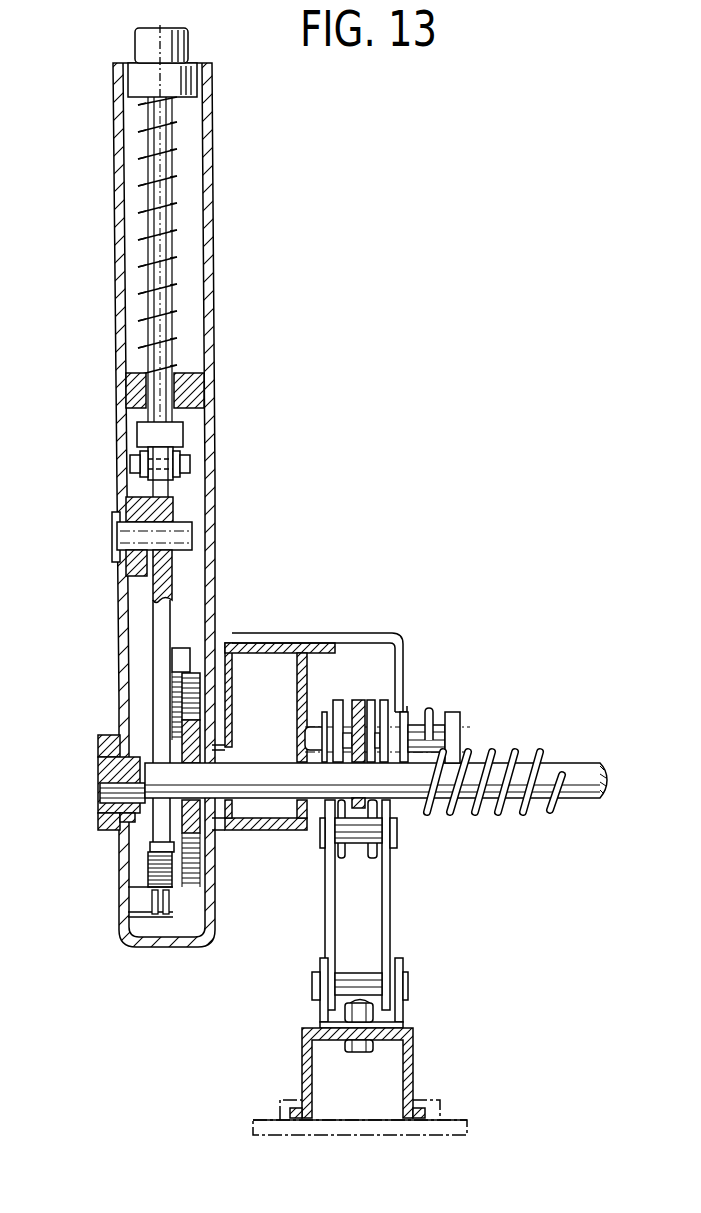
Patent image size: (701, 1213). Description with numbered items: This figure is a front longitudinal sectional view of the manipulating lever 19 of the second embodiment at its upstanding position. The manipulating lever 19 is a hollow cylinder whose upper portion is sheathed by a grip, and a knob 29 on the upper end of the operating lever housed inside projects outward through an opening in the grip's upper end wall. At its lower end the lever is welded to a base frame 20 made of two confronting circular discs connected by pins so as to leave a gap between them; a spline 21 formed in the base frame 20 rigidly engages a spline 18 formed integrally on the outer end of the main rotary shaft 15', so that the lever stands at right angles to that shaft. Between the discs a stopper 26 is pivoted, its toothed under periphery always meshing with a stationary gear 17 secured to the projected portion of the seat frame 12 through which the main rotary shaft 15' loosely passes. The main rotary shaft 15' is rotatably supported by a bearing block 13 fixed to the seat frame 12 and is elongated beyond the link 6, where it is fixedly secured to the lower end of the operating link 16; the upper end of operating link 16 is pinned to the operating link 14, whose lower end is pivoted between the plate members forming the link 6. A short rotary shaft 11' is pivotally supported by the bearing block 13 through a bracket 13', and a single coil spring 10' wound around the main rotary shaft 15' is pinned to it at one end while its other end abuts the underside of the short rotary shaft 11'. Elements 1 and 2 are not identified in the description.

The base 1 is at (412, 1070).
The pivot bracket 2 is at (402, 1012).
The link 6 is at (330, 918).
The coil spring 10' is at (499, 811).
The short rotary shaft 11' is at (451, 710).
The seat frame 12 is at (280, 832).
The bearing block 13 is at (273, 702).
The bracket 13' is at (319, 653).
The operating link 14 is at (372, 857).
The main rotary shaft 15' is at (377, 752).
The operating link 16 is at (356, 700).
The stationary gear 17 is at (190, 878).
The spline 18 is at (97, 800).
The manipulating lever 19 is at (213, 192).
The base frame 20 is at (118, 603).
The spline 21 is at (97, 752).
The stopper 26 is at (181, 648).
The knob 29 is at (188, 40).